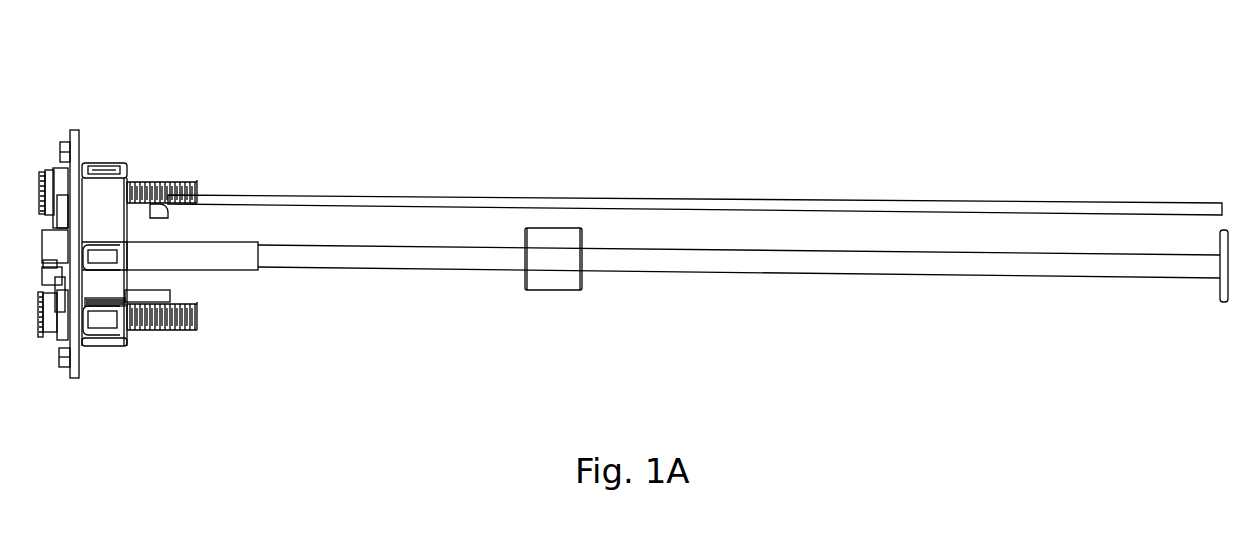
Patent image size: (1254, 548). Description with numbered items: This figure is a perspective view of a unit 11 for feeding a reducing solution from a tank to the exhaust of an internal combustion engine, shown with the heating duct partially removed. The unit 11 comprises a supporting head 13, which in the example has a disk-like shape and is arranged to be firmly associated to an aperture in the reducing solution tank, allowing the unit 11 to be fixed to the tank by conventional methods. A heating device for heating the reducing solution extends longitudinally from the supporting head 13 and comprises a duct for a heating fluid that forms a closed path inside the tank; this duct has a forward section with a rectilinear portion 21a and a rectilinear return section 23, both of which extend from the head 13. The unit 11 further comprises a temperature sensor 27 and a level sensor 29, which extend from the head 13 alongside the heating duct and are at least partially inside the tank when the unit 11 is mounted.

The unit 11 is at (455, 122).
The supporting head 13 is at (112, 140).
The rectilinear return section 23 is at (166, 180).
The temperature sensor 27 is at (220, 183).
The level sensor 29 is at (553, 298).
The rectilinear portion 21a is at (163, 330).